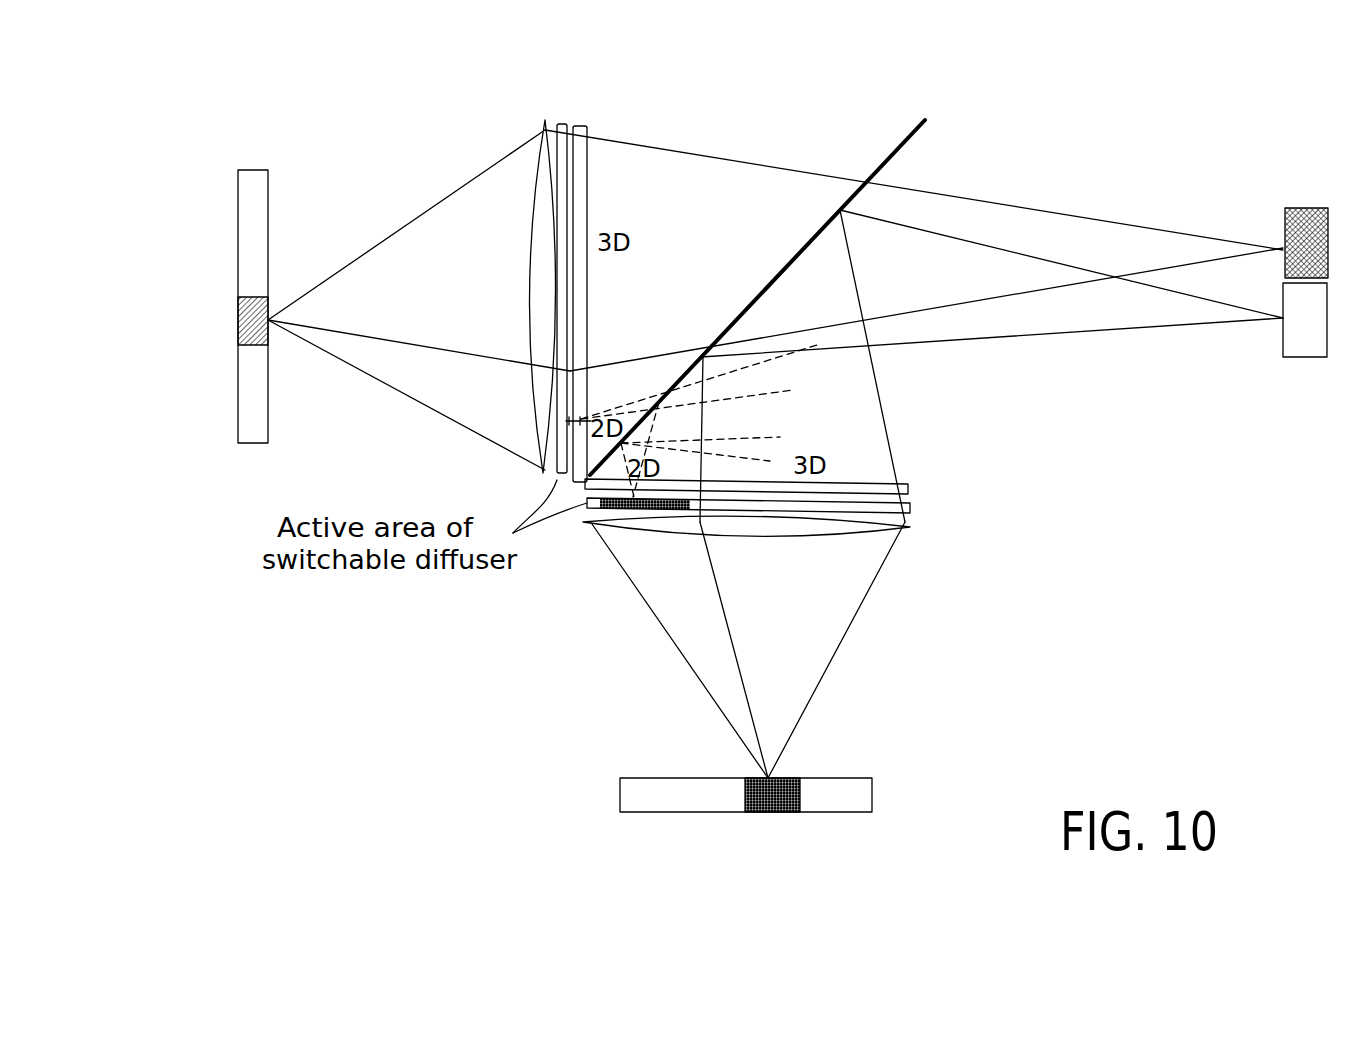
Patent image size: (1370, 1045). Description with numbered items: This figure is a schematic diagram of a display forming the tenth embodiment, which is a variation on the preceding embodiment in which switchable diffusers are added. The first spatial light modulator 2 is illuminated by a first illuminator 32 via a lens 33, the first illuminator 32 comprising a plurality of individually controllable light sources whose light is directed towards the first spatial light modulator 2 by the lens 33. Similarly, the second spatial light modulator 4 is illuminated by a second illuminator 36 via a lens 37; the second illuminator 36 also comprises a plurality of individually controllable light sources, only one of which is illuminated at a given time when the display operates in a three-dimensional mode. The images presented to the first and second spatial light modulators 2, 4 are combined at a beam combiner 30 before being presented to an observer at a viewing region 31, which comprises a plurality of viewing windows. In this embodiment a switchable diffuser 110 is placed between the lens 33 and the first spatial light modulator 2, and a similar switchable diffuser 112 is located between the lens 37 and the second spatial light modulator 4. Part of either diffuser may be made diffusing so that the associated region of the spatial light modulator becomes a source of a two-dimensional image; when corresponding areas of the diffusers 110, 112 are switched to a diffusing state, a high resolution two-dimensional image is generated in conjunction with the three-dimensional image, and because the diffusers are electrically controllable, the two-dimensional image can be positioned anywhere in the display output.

The first spatial light modulator 2 is at (908, 490).
The second spatial light modulator 4 is at (587, 130).
The beam combiner 30 is at (900, 142).
The viewing region 31 is at (1305, 207).
The first illuminator 32 is at (875, 800).
The lens 33 is at (907, 527).
The second illuminator 36 is at (235, 382).
The lens 37 is at (537, 168).
The switchable diffuser 110 is at (910, 508).
The switchable diffuser 112 is at (563, 124).